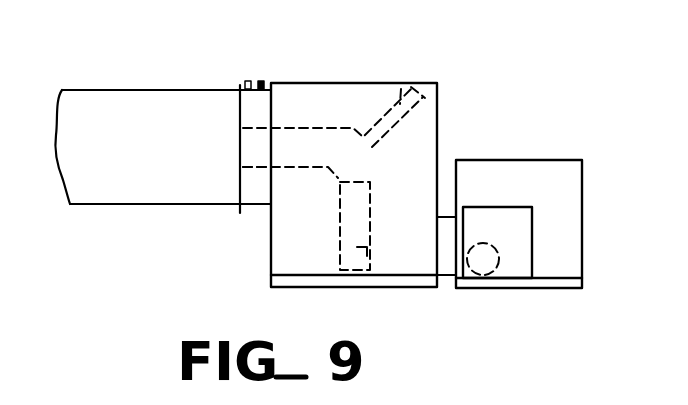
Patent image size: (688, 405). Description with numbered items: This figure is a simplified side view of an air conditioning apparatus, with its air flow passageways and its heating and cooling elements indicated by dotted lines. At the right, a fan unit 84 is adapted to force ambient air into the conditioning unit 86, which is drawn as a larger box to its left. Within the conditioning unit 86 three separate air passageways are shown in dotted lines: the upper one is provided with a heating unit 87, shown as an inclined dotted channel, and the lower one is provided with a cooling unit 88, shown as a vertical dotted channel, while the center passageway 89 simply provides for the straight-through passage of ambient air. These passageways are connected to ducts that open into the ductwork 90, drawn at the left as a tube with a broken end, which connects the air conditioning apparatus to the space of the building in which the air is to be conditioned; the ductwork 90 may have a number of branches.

The fan unit 84 is at (523, 158).
The conditioning unit 86 is at (335, 92).
The heating unit 87 is at (404, 82).
The cooling unit 88 is at (382, 257).
The center passageway 89 is at (302, 153).
The ductwork 90 is at (120, 90).